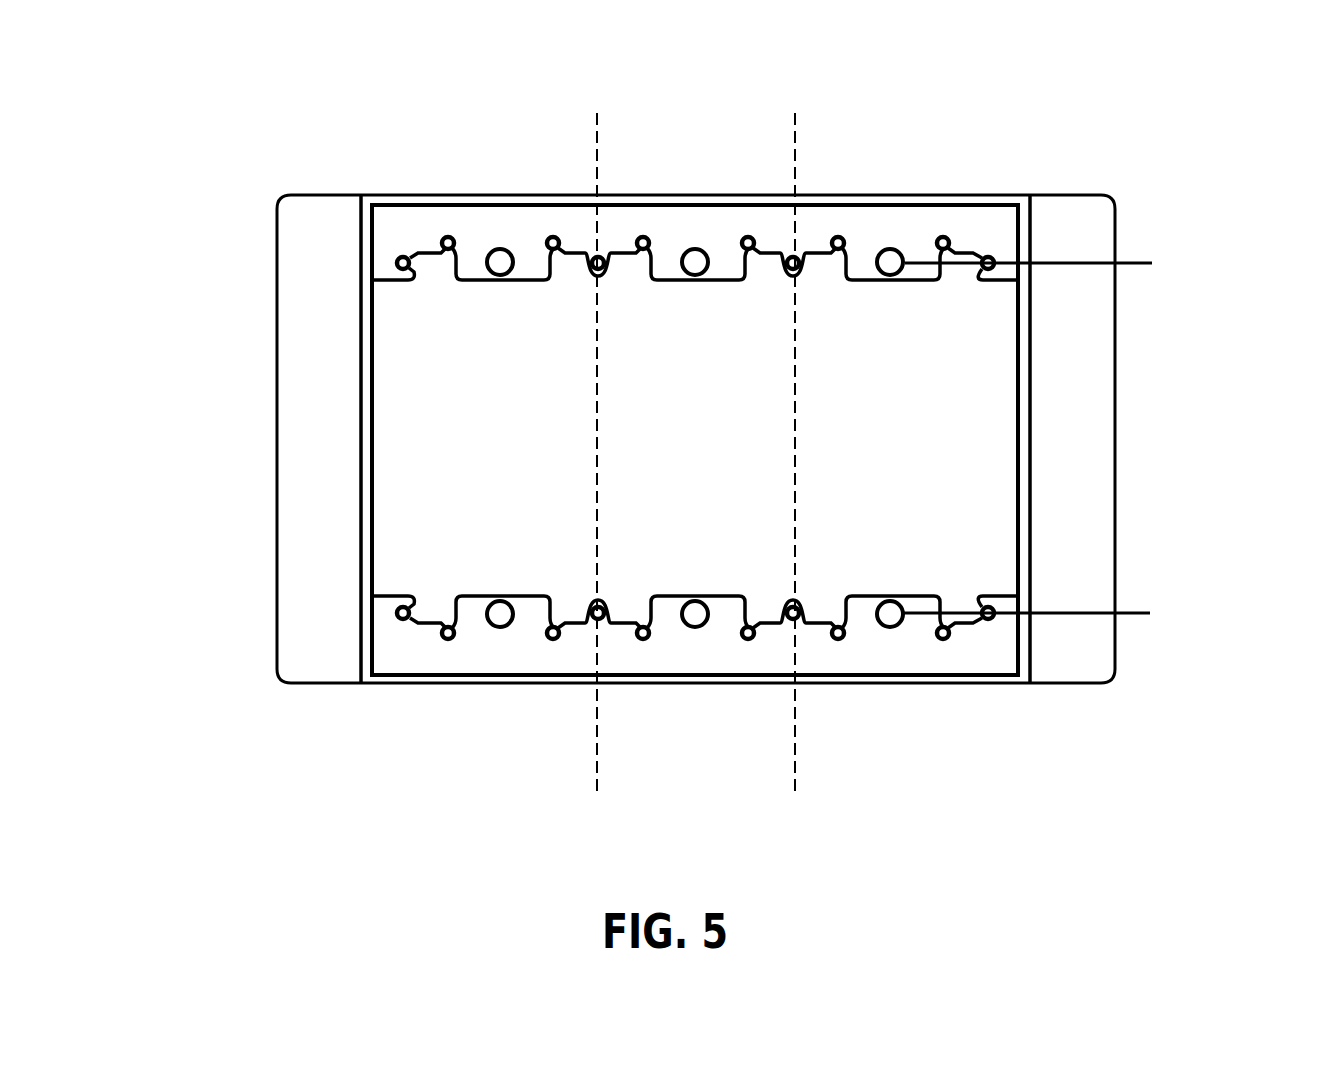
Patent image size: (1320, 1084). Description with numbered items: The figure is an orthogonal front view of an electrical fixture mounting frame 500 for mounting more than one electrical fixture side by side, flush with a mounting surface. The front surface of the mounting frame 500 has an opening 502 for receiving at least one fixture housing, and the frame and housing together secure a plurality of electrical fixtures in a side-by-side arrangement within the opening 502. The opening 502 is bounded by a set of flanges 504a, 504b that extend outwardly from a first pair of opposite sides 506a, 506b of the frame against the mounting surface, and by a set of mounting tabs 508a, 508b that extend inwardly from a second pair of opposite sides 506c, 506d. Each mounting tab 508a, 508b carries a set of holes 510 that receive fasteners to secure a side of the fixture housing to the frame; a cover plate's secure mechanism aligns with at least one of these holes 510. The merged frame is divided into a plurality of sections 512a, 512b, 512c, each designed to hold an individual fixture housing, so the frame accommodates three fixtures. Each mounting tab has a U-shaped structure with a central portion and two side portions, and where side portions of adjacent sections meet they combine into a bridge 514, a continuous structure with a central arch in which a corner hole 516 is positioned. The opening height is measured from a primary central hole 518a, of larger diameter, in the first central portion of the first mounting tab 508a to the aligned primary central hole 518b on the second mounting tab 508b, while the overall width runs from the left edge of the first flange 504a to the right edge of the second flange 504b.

The electrical fixture mounting frame 500 is at (366, 113).
The opening 502 is at (372, 595).
The first flange 504a is at (302, 453).
The second flange 504b is at (1078, 413).
The first side of first pair of opposite sides 506a is at (358, 247).
The second side of first pair of opposite sides 506b is at (1032, 215).
The first side of second pair of opposite sides 506c is at (952, 205).
The second side of second pair of opposite sides 506d is at (662, 687).
The first mounting tab 508a is at (997, 223).
The second mounting tab 508b is at (998, 660).
The set of holes 510 is at (403, 619).
The first section 512a is at (506, 453).
The second section 512b is at (733, 453).
The third section 512c is at (907, 432).
The bridge 514 is at (594, 617).
The corner hole 516 is at (601, 256).
The primary central hole 518a is at (1077, 258).
The primary central hole 518b is at (1075, 617).